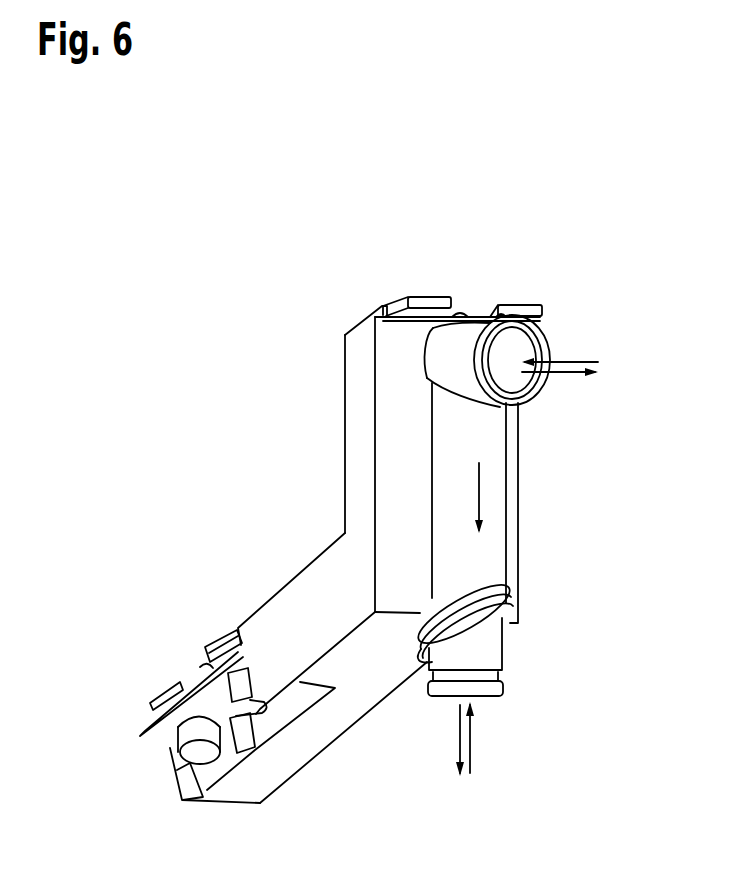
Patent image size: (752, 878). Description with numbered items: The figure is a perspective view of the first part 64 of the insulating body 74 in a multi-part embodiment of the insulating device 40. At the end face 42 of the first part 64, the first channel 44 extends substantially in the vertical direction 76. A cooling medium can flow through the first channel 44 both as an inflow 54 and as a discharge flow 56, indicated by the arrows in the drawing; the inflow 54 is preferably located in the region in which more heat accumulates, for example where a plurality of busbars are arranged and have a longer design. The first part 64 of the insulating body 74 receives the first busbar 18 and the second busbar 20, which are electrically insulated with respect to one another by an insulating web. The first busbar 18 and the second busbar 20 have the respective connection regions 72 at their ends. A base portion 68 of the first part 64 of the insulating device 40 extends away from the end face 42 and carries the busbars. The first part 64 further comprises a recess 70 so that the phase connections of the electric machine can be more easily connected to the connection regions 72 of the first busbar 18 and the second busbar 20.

The insulating device 40 is at (376, 494).
The first part 64 is at (567, 213).
The first busbar 18 is at (417, 295).
The connection regions 72 is at (502, 303).
The second busbar 20 is at (528, 303).
The discharge flow 56 is at (567, 365).
The inflow 54 is at (567, 365).
The first channel 44 is at (452, 360).
The end face 42 is at (404, 458).
The vertical direction 76 is at (480, 508).
The recess 70 is at (210, 775).
The base portion 68 is at (304, 774).
The insulating body 74 is at (264, 807).